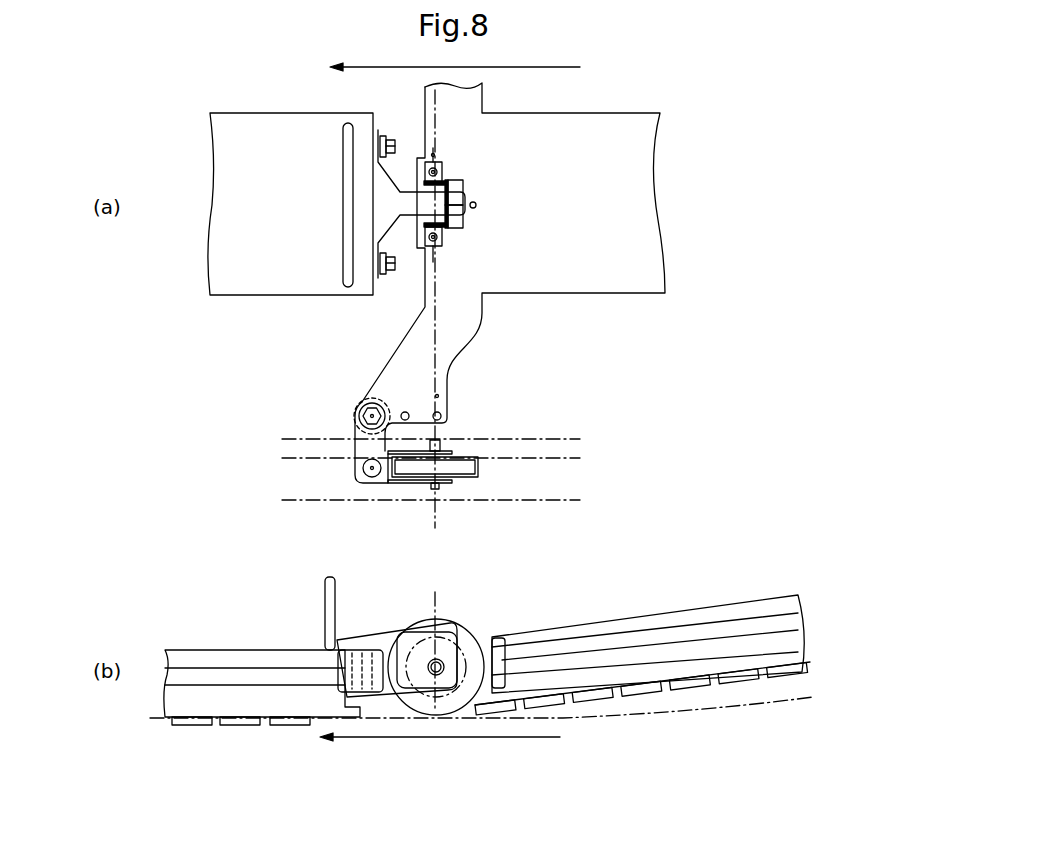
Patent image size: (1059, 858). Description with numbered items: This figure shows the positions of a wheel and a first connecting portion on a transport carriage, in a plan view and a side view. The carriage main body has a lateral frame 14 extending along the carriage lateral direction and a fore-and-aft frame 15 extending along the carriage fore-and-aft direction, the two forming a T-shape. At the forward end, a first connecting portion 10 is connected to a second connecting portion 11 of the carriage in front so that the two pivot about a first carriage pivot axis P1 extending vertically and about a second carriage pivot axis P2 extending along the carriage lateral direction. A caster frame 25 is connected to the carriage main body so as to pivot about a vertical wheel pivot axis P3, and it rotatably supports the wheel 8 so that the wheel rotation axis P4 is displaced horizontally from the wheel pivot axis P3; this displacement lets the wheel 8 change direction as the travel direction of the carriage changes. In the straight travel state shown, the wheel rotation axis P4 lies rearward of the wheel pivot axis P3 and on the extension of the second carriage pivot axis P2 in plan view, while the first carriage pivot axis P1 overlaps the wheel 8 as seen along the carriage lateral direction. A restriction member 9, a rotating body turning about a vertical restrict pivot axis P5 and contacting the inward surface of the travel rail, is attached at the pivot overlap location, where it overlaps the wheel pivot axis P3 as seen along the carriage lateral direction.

The wheel 8 is at (462, 470).
The restriction member 9 is at (360, 404).
The first connecting portion 10 is at (462, 180).
The second connecting portion 11 is at (455, 216).
The lateral frame 14 is at (468, 316).
The fore-and-aft frame 15 is at (292, 285).
The caster frame 25 is at (402, 485).
The first carriage pivot axis P1 is at (433, 207).
The second carriage pivot axis P2 is at (436, 155).
The wheel pivot axis P3 is at (372, 468).
The wheel rotation axis P4 is at (437, 396).
The restrict pivot axis P5 is at (372, 417).